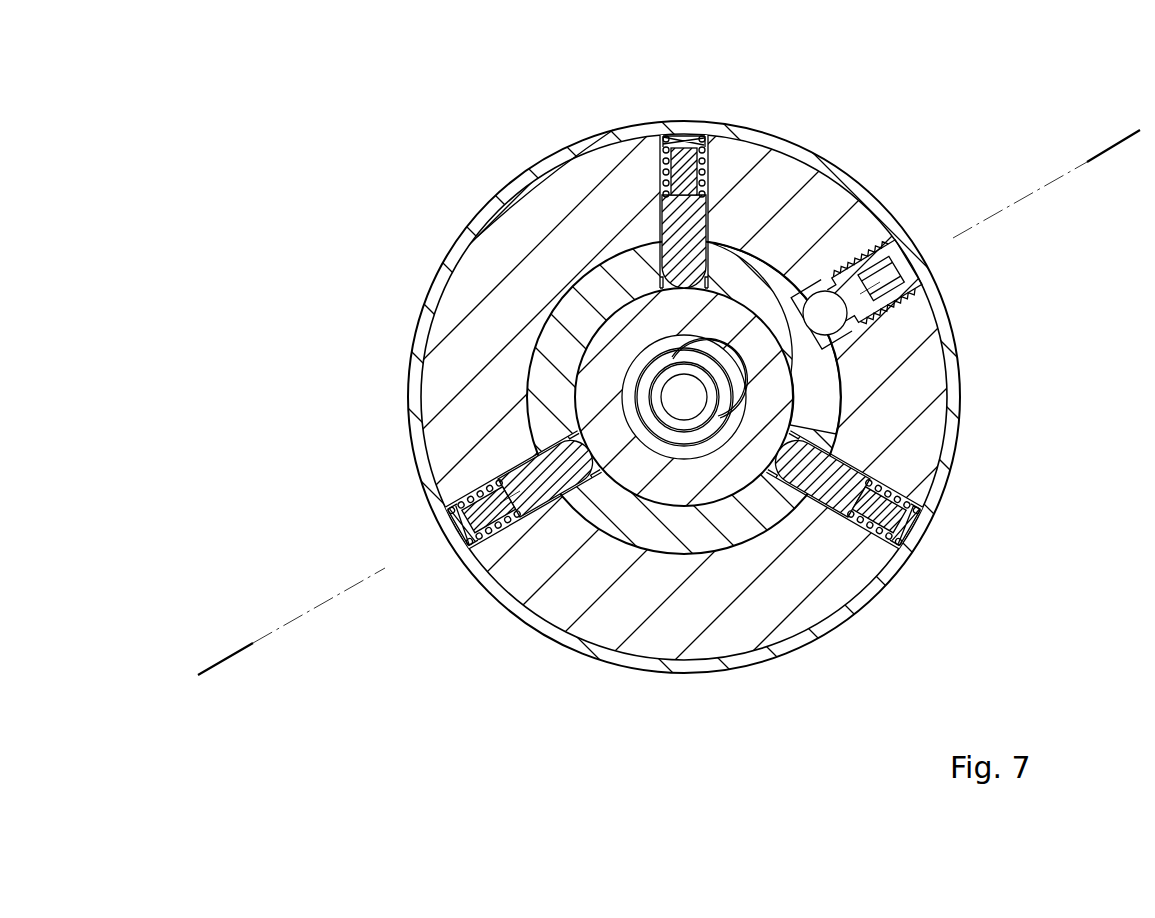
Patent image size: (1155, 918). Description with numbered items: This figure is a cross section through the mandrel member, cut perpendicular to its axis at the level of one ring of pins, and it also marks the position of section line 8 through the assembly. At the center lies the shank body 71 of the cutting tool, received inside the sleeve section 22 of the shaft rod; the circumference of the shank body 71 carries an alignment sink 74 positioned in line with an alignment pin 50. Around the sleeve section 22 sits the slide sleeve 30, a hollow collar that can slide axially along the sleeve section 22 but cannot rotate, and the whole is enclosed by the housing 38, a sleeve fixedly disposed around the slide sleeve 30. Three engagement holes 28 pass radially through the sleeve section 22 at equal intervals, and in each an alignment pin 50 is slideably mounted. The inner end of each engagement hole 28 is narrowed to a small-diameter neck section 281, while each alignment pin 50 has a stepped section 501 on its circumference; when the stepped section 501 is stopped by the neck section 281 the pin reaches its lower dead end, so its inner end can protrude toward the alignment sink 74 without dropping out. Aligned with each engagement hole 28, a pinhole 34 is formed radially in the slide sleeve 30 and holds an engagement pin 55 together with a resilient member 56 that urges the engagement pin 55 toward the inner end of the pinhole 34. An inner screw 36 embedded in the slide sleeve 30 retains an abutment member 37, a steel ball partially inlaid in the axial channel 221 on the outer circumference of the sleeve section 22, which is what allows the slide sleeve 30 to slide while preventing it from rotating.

The section line 8- 8 is at (1112, 145).
The sleeve section 22 is at (688, 525).
The engagement hole 28 is at (737, 250).
The slide sleeve 30 is at (468, 357).
The pinhole 34 is at (708, 178).
The inner screw 36 is at (888, 248).
The abutment member 37 is at (825, 313).
The housing 38 is at (843, 172).
The alignment pin 50 is at (680, 257).
The engagement pin 55 is at (688, 140).
The resilient member 56 is at (681, 138).
The shank body 71 is at (770, 500).
The alignment sink 74 is at (800, 420).
The axial channel 221 is at (833, 396).
The neck section 281 is at (663, 283).
The stepped section 501 is at (662, 277).